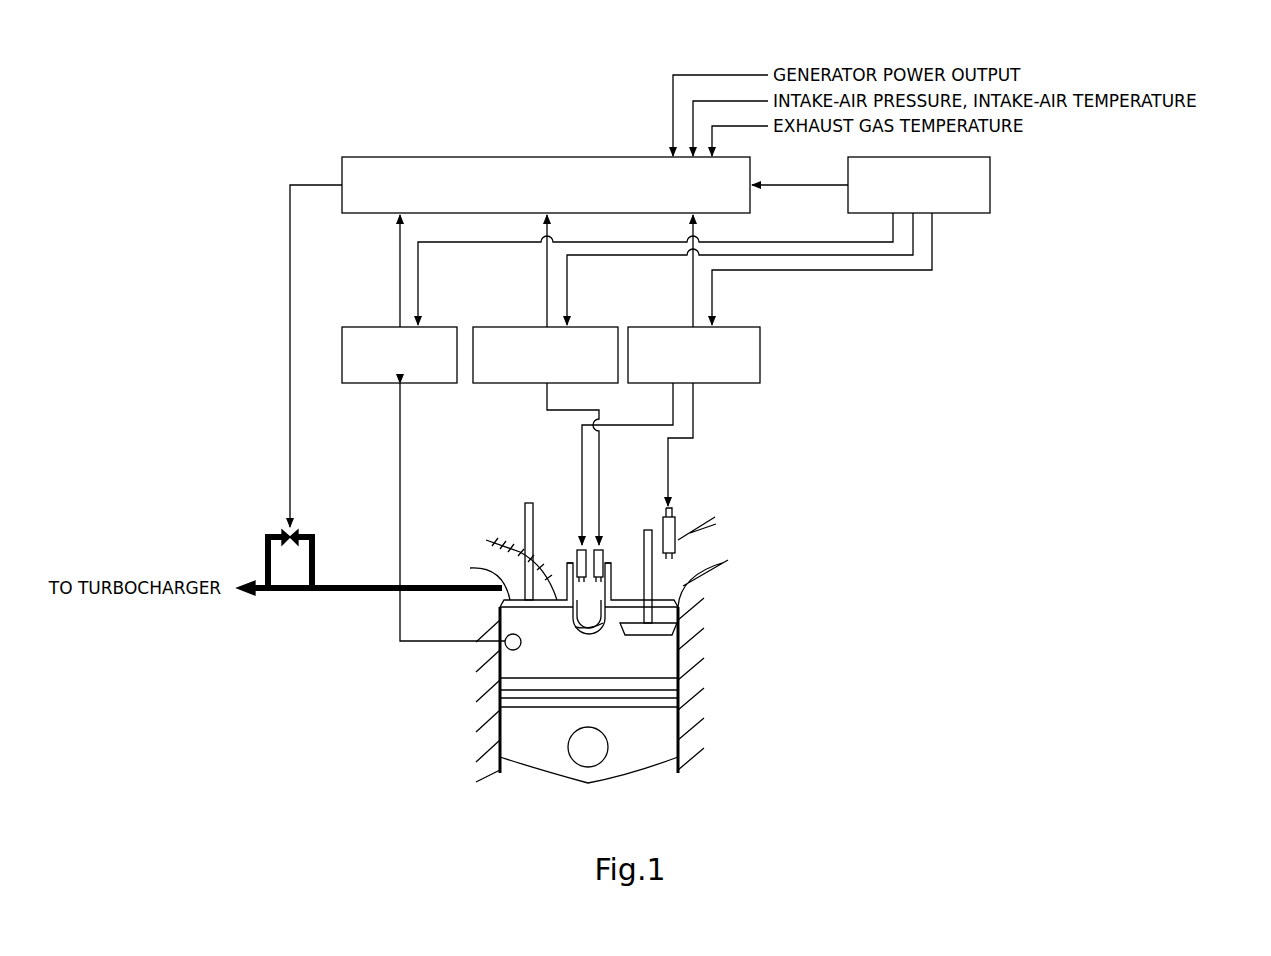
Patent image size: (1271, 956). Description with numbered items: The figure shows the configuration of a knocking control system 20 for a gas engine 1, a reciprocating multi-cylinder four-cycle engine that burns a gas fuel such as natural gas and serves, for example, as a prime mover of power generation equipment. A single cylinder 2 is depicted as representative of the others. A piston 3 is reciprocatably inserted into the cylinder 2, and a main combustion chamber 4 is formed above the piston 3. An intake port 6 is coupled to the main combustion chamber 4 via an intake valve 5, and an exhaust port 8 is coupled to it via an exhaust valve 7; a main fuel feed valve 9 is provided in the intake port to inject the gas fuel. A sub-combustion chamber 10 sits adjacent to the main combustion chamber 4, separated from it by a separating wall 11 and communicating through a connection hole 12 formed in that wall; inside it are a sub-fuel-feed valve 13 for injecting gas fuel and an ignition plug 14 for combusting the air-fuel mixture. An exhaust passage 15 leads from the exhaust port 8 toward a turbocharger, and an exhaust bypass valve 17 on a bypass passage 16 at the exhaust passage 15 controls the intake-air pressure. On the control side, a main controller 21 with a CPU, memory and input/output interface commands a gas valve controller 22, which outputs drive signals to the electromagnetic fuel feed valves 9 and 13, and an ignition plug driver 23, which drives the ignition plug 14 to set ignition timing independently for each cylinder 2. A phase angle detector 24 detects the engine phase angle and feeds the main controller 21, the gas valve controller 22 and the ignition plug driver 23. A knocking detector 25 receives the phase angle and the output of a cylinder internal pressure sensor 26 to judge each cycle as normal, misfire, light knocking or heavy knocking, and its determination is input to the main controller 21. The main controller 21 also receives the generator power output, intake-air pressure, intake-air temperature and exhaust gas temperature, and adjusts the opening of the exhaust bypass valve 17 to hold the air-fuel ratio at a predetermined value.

The gas engine 1 is at (781, 499).
The cylinder 2 is at (665, 662).
The piston 3 is at (632, 733).
The main combustion chamber 4 is at (500, 626).
The intake valve 5 is at (687, 648).
The intake port 6 is at (693, 566).
The exhaust valve 7 is at (500, 600).
The exhaust port 8 is at (515, 565).
The main fuel feed valve 9 is at (679, 531).
The sub-combustion chamber 10 is at (567, 565).
The separating wall 11 is at (612, 565).
The connection hole 12 is at (606, 624).
The sub-fuel-feed valve 13 is at (577, 551).
The ignition plug 14 is at (603, 551).
The exhaust passage 15 is at (350, 594).
The bypass passage 16 is at (313, 574).
The exhaust bypass valve 17 is at (292, 529).
The knocking control system 20 is at (337, 127).
The main controller 21 is at (532, 157).
The gas valve controller 22 is at (733, 326).
The ignition plug driver 23 is at (587, 326).
The phase angle detector 24 is at (996, 184).
The knocking detector 25 is at (441, 326).
The cylinder internal pressure sensor 26 is at (505, 646).